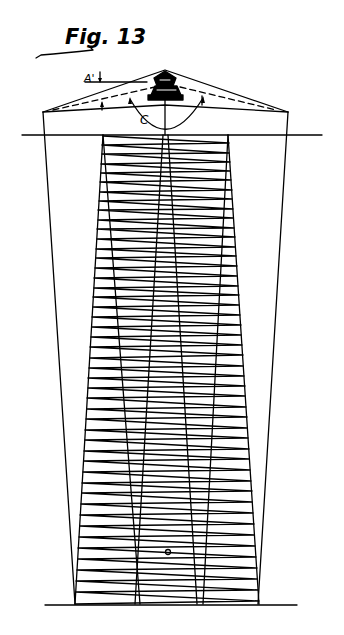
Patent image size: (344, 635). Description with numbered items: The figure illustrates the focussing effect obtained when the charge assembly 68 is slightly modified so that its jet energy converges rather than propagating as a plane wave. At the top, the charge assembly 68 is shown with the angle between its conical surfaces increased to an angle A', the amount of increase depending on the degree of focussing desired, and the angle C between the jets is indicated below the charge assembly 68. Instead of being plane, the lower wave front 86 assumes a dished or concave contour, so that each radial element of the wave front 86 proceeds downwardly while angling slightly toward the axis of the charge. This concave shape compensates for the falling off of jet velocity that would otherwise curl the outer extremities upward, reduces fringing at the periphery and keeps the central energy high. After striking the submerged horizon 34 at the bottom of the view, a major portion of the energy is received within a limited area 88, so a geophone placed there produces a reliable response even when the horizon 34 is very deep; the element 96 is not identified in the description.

The submerged horizon 34 is at (51, 604).
The charge assembly 68 is at (166, 70).
The lower wave front 86 is at (104, 108).
The limited area 88 is at (209, 136).
The center mast 96 is at (175, 118).